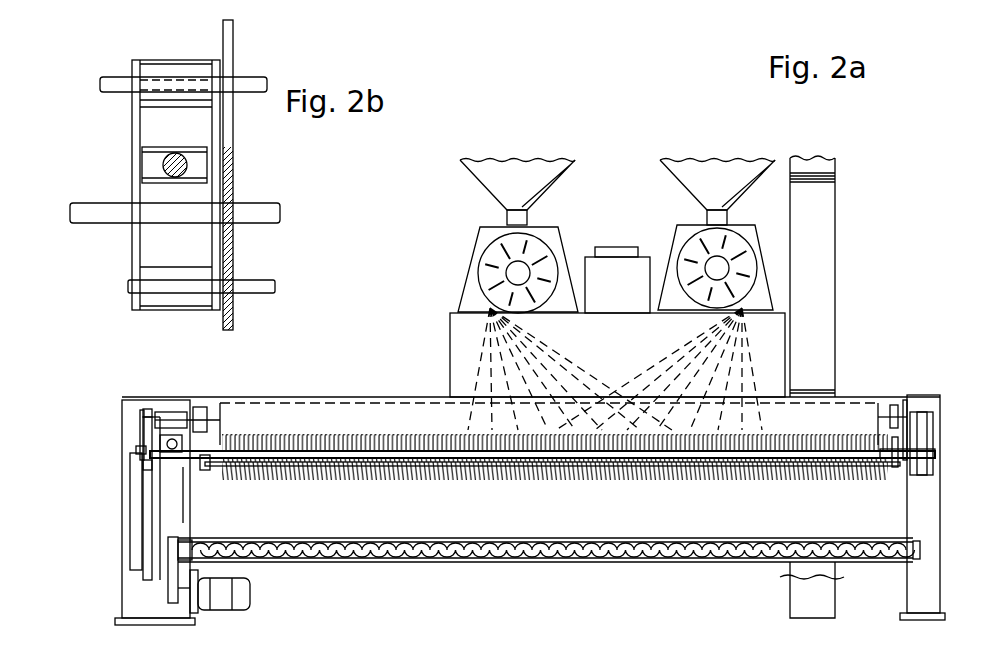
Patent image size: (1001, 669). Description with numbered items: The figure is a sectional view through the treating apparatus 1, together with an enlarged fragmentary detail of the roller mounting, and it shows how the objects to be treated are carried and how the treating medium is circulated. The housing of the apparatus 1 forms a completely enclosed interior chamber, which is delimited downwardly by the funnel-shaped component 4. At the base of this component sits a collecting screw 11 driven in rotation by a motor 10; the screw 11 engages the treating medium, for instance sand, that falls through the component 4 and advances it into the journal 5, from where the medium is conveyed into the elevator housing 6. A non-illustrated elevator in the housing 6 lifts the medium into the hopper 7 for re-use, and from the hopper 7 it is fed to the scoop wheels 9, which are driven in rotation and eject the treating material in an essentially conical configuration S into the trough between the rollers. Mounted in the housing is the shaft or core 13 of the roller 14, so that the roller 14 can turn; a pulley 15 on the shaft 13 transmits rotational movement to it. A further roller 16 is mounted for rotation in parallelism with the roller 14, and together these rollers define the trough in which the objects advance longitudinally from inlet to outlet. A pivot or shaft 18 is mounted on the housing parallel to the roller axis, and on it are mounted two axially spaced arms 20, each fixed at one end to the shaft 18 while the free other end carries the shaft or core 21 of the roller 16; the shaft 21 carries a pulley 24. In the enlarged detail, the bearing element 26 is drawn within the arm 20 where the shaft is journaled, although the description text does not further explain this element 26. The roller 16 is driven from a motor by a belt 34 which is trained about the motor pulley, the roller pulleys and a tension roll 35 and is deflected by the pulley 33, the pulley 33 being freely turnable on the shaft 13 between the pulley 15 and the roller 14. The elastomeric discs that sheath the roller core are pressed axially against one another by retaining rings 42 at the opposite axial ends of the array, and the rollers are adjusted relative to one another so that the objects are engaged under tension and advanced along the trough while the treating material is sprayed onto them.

In FIG. 2A, the apparatus 1 is at (117, 501).
In FIG. 2A, the funnel-shaped component 4 is at (636, 518).
In FIG. 2A, the journal 5 is at (832, 567).
In FIG. 2A, the elevator housing 6 is at (820, 198).
In FIG. 2A, the hopper 7 is at (527, 177).
In FIG. 2A, the scoop wheels 9 is at (492, 263).
In FIG. 2A, the motor 10 is at (238, 592).
In FIG. 2A, the collecting screw 11 is at (423, 560).
In FIG. 2B, the shaft or core 13 is at (107, 212).
In FIG. 2A, the shaft or core 13 is at (930, 438).
In FIG. 2A, the roller 14 is at (340, 452).
In FIG. 2A, the pulley 15 is at (138, 450).
In FIG. 2A, the roller 16 is at (310, 418).
In FIG. 2B, the pivot or shaft 18 is at (253, 282).
In FIG. 2A, the pivot or shaft 18 is at (217, 472).
In FIG. 2B, the arms 20 is at (188, 72).
In FIG. 2A, the arms 20 is at (177, 417).
In FIG. 2A, the shaft or core 21 is at (140, 422).
In FIG. 2A, the pulley 24 is at (147, 415).
In FIG. 2B, the bearing bush 26 is at (153, 153).
In FIG. 2A, the bearing bush 26 is at (162, 442).
In FIG. 2A, the pulley 33 is at (147, 465).
In FIG. 2A, the belt 34 is at (147, 550).
In FIG. 2A, the tension roll 35 is at (135, 530).
In FIG. 2A, the retaining rings 42 is at (212, 412).
In FIG. 2A, the conical configuration S is at (643, 371).